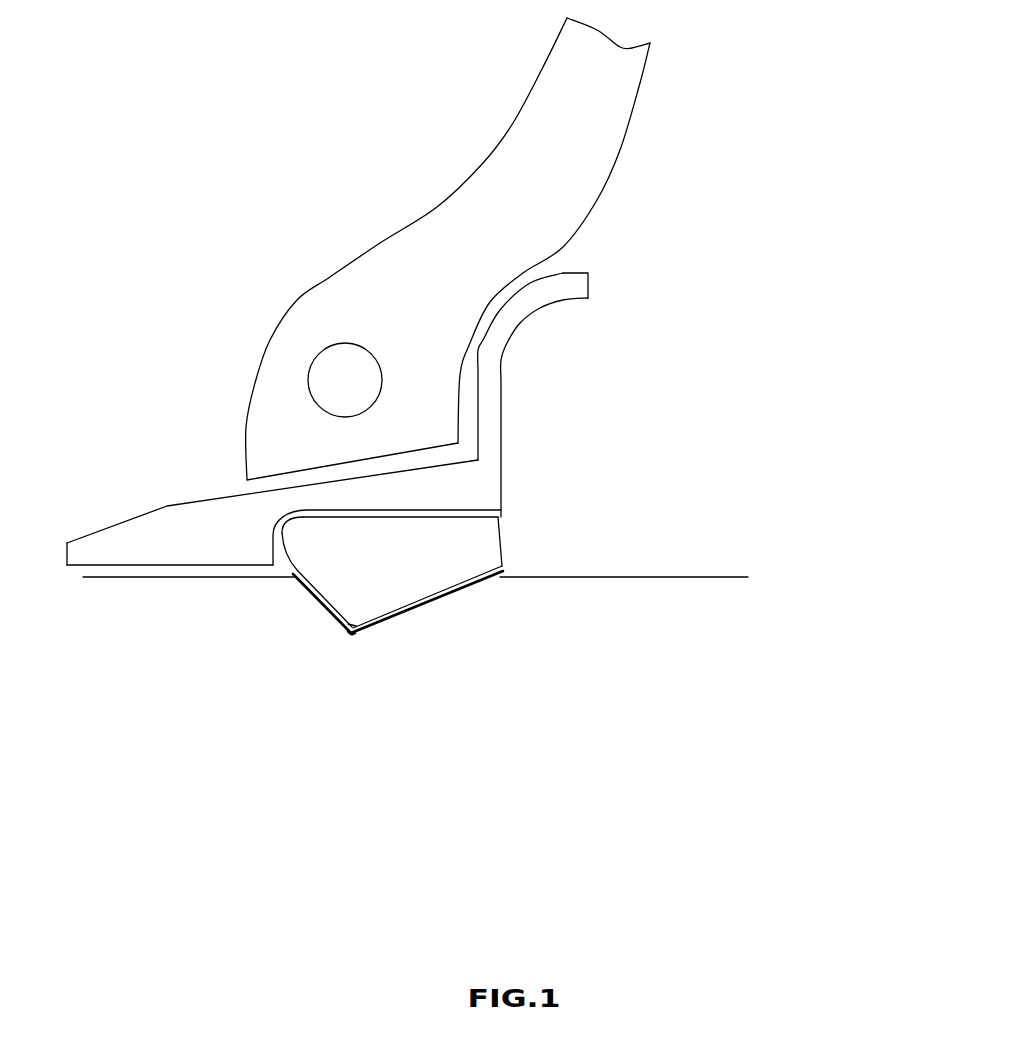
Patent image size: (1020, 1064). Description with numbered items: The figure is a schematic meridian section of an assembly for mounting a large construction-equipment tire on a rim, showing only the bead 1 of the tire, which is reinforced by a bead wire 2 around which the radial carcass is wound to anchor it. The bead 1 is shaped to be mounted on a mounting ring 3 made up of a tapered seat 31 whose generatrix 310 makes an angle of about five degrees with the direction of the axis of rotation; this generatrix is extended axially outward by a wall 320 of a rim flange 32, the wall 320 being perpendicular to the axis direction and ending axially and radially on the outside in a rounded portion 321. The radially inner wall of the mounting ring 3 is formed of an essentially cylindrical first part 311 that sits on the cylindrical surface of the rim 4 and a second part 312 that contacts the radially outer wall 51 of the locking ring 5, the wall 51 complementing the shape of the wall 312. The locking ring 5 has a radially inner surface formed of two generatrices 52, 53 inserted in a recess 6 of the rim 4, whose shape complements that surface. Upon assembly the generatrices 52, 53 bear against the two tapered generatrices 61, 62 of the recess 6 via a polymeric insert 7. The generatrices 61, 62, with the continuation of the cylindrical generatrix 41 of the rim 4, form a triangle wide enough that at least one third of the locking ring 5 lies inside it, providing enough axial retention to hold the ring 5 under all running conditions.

The bead 1 is at (427, 237).
The bead wire 2 is at (332, 382).
The mounting ring 3 is at (385, 459).
The tapered seat 31 is at (264, 546).
The generatrix 310 is at (193, 500).
The first part 311 is at (112, 565).
The second part 312 is at (412, 510).
The rim flange 32 is at (543, 395).
The wall 320 is at (480, 418).
The rounded portion 321 is at (563, 272).
The rim 4 is at (415, 603).
The cylindrical generatrix 41 is at (653, 577).
The locking ring 5 is at (444, 602).
The radially outer wall 51 is at (463, 513).
The generatrix 52 is at (475, 588).
The generatrix 53 is at (330, 600).
The recess 6 is at (364, 668).
The tapered generatrix 61 is at (305, 596).
The tapered generatrix 62 is at (432, 608).
The polymeric insert 7 is at (352, 636).